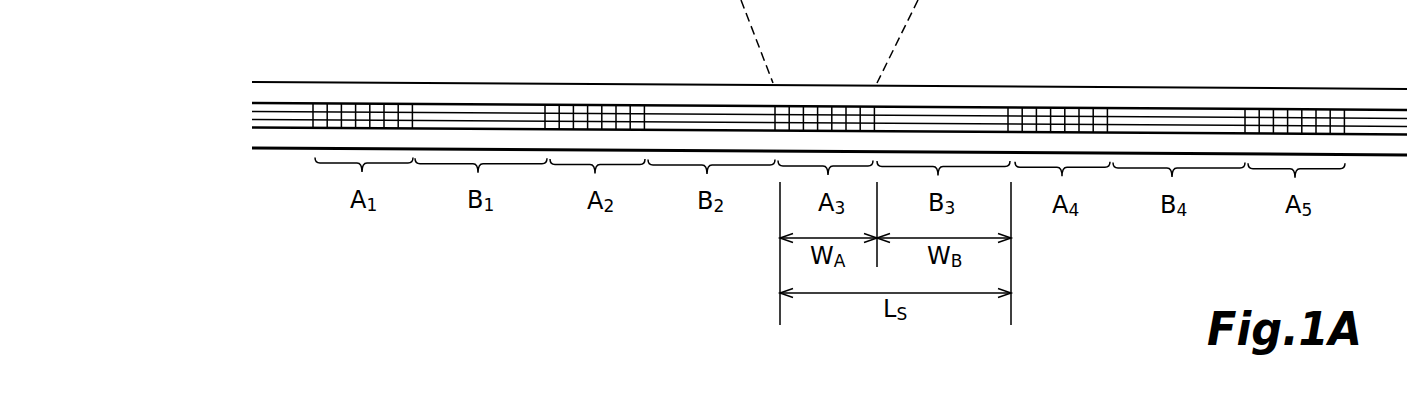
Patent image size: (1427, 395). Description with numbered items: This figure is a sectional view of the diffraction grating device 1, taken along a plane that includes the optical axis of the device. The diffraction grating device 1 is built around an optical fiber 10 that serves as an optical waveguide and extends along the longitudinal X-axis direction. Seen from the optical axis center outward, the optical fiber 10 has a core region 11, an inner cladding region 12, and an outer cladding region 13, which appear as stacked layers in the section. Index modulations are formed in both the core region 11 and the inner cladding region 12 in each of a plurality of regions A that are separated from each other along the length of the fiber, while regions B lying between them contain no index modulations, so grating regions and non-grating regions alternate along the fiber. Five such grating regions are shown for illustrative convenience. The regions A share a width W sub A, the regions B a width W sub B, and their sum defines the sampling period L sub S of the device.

The diffraction grating device 1 is at (285, 82).
The optical fiber 10 is at (153, 27).
The core region 11 is at (251, 116).
The inner cladding region 12 is at (252, 105).
The outer cladding region 13 is at (258, 92).